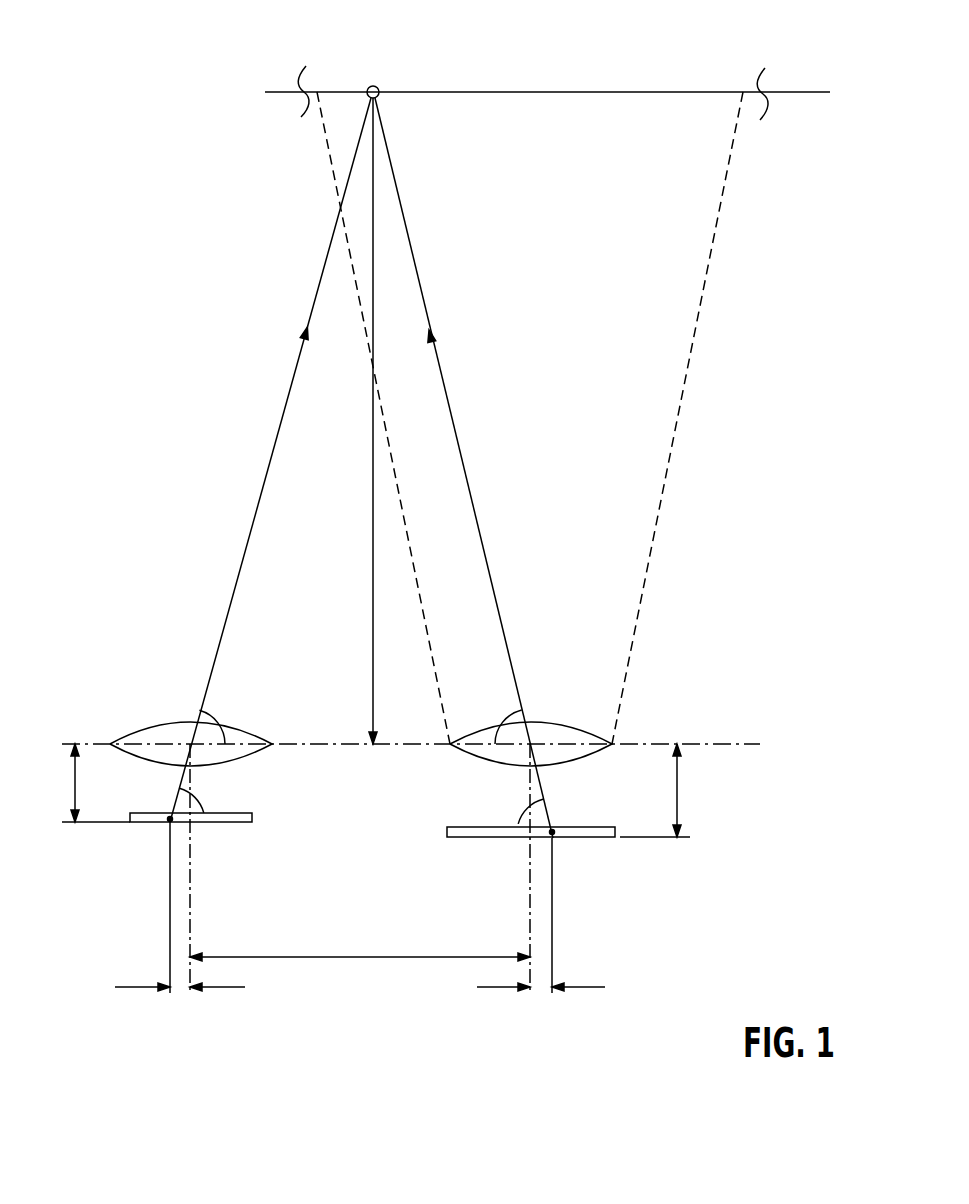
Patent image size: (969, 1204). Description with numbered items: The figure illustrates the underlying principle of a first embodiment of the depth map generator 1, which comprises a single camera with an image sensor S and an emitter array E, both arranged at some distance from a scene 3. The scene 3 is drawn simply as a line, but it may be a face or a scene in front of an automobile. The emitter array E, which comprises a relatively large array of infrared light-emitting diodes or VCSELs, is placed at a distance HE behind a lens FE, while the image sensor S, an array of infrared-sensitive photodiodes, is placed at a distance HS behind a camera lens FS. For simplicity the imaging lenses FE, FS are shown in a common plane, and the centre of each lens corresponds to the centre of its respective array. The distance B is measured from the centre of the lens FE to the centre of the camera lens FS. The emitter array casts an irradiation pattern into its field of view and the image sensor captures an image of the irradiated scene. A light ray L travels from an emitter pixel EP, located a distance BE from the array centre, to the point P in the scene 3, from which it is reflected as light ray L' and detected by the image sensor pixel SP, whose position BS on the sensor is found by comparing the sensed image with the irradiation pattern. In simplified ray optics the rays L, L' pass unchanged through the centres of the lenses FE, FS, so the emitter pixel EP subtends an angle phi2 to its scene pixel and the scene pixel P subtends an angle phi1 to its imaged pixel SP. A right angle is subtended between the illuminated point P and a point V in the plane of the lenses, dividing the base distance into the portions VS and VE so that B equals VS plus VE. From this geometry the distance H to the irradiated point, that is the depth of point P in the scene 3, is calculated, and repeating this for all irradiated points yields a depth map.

The depth map generator 1 is at (216, 238).
The scene 3 is at (783, 93).
The point in the scene P is at (380, 87).
The reflected light ray L' is at (270, 460).
The light ray L is at (464, 468).
The distance to the irradiated point H is at (372, 485).
The point in the plane of the lenses V is at (376, 746).
The camera lens FS is at (146, 727).
The lens FE is at (597, 730).
The angle subtended by scene pixel to imaged pixel phi1 is at (216, 756).
The angle subtended by emitter pixel to scene pixel phi2 is at (513, 758).
The sensor-side portion of the base distance VS is at (310, 745).
The emitter-side portion of the base distance VE is at (416, 745).
The distance of the image sensor behind lens FS HS is at (78, 783).
The distance of the emitter array behind lens FE HE is at (680, 788).
The image sensor S is at (229, 823).
The image sensor pixel SP is at (169, 824).
The emitter array E is at (492, 838).
The emitter pixel EP is at (555, 839).
The distance between lens centres B is at (360, 944).
The position of the image sensor pixel BS is at (180, 989).
The distance from array centre to emitting pixel BE is at (543, 989).